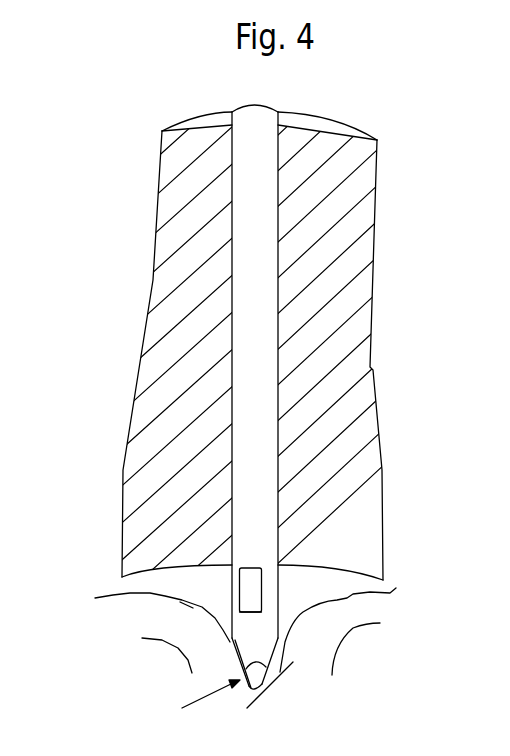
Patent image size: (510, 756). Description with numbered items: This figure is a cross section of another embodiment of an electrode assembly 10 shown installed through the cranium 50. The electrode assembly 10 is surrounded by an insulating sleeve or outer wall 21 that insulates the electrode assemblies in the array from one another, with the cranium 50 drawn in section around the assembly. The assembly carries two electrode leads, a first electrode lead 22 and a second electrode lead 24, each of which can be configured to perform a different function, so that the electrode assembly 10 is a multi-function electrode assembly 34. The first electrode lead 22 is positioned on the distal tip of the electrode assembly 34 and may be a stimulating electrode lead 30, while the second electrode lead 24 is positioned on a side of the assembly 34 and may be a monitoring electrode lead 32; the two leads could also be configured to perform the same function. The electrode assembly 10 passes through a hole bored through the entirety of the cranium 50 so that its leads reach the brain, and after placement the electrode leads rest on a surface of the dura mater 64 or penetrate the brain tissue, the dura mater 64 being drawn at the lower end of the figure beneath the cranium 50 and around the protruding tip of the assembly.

The electrode assembly 10 is at (258, 188).
The cranium 50 is at (173, 363).
The multi-function electrode assembly 34 is at (258, 353).
The insulating sleeve or outer wall 21 is at (233, 642).
The second electrode lead 24 is at (251, 577).
The monitoring electrode lead 32 is at (251, 598).
The first electrode lead 22 is at (262, 684).
The stimulating electrode lead 30 is at (256, 689).
The dura mater 64 is at (162, 625).